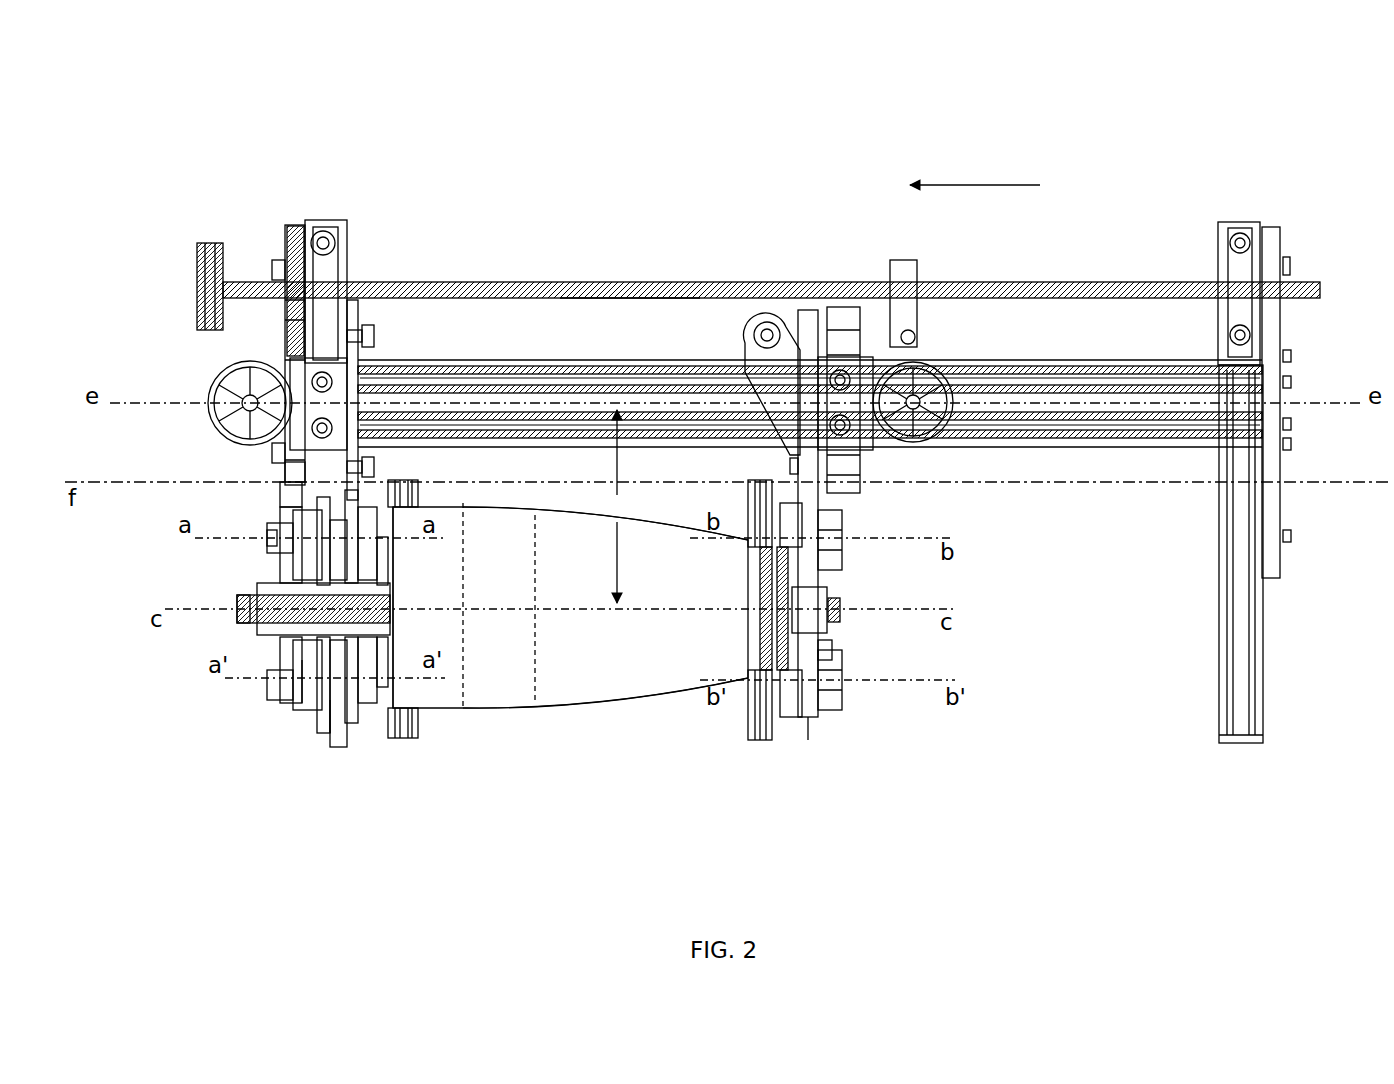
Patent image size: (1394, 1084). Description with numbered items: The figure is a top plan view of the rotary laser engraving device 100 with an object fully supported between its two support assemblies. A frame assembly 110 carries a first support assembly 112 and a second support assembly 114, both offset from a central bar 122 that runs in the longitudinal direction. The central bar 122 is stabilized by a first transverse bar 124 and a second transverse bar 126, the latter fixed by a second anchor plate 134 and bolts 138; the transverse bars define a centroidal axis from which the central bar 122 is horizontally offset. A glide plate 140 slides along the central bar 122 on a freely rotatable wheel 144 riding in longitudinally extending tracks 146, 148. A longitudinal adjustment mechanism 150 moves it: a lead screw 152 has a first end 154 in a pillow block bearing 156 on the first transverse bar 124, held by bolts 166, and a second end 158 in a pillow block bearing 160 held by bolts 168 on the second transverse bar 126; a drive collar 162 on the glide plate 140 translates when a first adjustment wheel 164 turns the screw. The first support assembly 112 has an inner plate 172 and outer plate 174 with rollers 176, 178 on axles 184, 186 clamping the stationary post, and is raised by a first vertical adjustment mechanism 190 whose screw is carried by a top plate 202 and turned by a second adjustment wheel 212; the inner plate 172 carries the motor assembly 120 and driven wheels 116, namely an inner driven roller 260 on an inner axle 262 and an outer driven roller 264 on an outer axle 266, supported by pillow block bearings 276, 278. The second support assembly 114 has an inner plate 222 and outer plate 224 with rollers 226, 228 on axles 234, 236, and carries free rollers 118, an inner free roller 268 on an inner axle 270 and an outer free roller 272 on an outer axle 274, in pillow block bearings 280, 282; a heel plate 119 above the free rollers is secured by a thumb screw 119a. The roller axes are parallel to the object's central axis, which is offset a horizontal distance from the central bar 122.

The rotary laser engraving device 100 is at (378, 92).
The frame assembly 110 is at (1255, 785).
The first support assembly 112 is at (230, 705).
The second support assembly 114 is at (795, 795).
The driven wheels 116 is at (412, 490).
The free rollers 118 is at (748, 488).
The heel plate 119 is at (760, 625).
The thumb screw 119a is at (840, 615).
The motor assembly 120 is at (250, 740).
The central bar 122 is at (1110, 440).
The first transverse bar 124 is at (325, 222).
The second transverse bar 126 is at (1255, 225).
The second anchor plate 134 is at (1270, 500).
The bolts 138 is at (1292, 356).
The glide plate 140 is at (935, 330).
The freely rotatable wheel 144 is at (775, 315).
The longitudinally extending track 146 is at (1080, 450).
The longitudinally extending track 148 is at (716, 355).
The longitudinal adjustment mechanism 150 is at (505, 276).
The lead screw 152 is at (568, 283).
The first end 154 is at (290, 250).
The pillow block bearing 156 is at (328, 270).
The second end 158 is at (1292, 268).
The pillow block bearing 160 is at (1245, 270).
The drive collar 162 is at (905, 262).
The first adjustment wheel 164 is at (208, 243).
The bolts 166 is at (335, 242).
The bolts 168 is at (1240, 233).
The inner plate 172 is at (352, 362).
The outer plate 174 is at (290, 470).
The roller 176 is at (300, 490).
The roller 178 is at (285, 318).
The axle 184 is at (374, 468).
The axle 186 is at (374, 334).
The first vertical adjustment mechanism 190 is at (165, 420).
The top plate 202 is at (272, 453).
The second adjustment wheel 212 is at (212, 393).
The inner plate 222 is at (810, 720).
The outer plate 224 is at (878, 490).
The roller 226 is at (842, 496).
The roller 228 is at (825, 305).
The axle 234 is at (792, 466).
The axle 236 is at (792, 300).
The inner driven roller 260 is at (452, 505).
The inner axle 262 is at (268, 540).
The outer driven roller 264 is at (332, 745).
The outer axle 266 is at (285, 715).
The inner free roller 268 is at (740, 540).
The inner axle 270 is at (842, 540).
The outer free roller 272 is at (760, 720).
The outer axle 274 is at (845, 690).
The pillow block bearing 276 is at (268, 560).
The pillow block bearing 278 is at (270, 670).
The pillow block bearing 280 is at (827, 585).
The pillow block bearing 282 is at (835, 652).